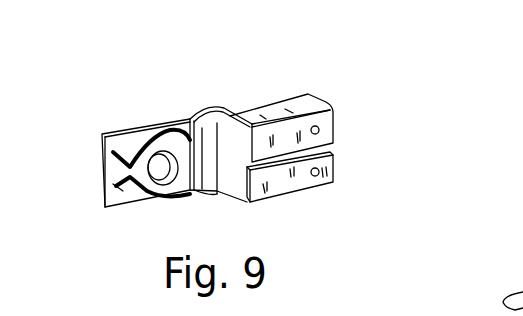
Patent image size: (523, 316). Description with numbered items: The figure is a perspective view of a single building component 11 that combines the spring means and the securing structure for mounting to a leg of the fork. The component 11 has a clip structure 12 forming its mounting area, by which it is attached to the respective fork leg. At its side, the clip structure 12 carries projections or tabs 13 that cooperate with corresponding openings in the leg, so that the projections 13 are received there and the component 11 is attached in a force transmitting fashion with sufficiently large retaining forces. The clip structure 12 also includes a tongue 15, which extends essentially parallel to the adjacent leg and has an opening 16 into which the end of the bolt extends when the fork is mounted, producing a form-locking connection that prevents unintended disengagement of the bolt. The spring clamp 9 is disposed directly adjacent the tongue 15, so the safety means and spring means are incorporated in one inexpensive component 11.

The spring clamp 9 is at (114, 191).
The component 11 is at (261, 105).
The clip structure 12 is at (312, 102).
The projections 13 is at (320, 130).
The tongue 15 is at (140, 130).
The opening 16 is at (160, 172).